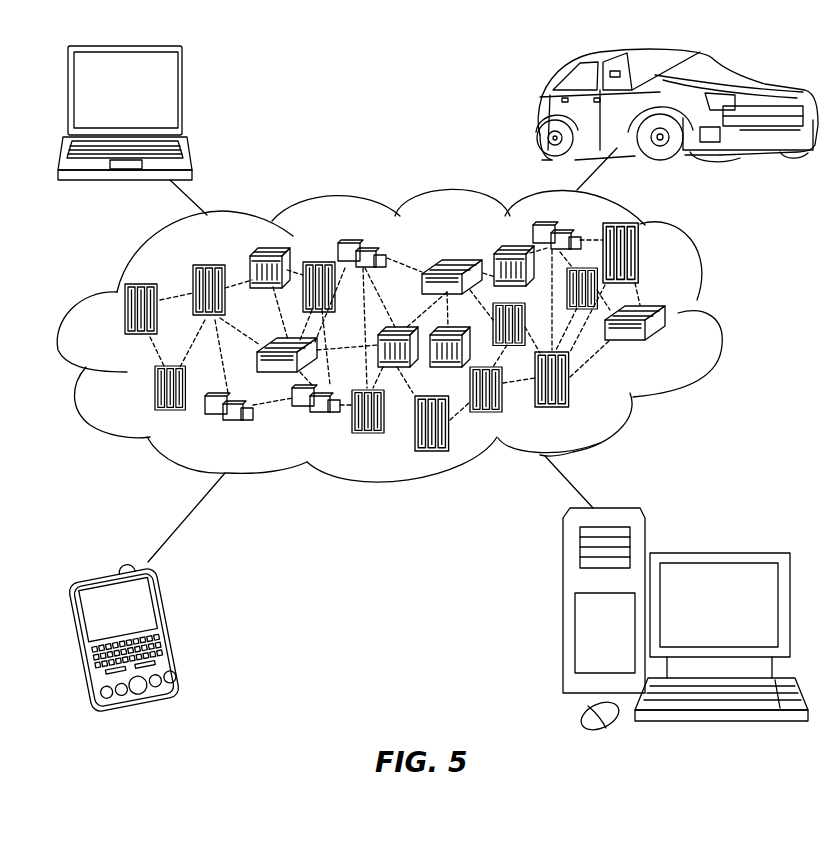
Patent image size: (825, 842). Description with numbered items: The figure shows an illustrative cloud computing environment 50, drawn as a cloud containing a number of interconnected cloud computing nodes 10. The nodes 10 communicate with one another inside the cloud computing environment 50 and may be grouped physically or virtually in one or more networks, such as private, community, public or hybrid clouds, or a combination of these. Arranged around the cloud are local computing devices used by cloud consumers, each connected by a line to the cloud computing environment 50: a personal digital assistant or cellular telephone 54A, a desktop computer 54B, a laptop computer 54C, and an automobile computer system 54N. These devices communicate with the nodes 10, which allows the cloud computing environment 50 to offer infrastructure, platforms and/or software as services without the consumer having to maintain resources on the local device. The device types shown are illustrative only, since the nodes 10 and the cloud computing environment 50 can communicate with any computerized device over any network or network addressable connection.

The cloud computing nodes 10 is at (676, 346).
The cloud computing environment 50 is at (718, 318).
The personal digital assistant (PDA) or cellular telephone 54A is at (172, 630).
The desktop computer 54B is at (720, 550).
The laptop computer 54C is at (183, 97).
The automobile computer system 54N is at (540, 108).